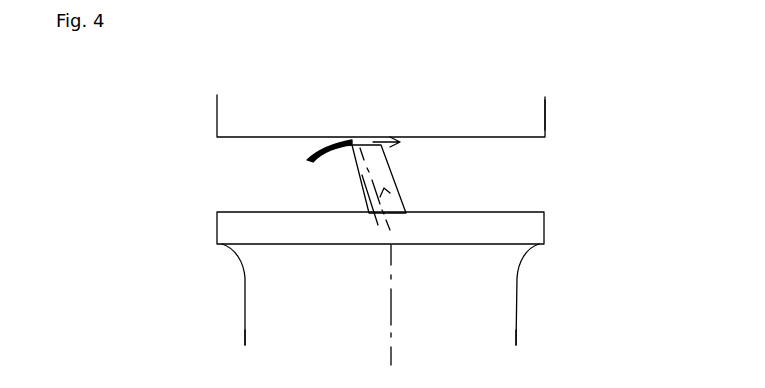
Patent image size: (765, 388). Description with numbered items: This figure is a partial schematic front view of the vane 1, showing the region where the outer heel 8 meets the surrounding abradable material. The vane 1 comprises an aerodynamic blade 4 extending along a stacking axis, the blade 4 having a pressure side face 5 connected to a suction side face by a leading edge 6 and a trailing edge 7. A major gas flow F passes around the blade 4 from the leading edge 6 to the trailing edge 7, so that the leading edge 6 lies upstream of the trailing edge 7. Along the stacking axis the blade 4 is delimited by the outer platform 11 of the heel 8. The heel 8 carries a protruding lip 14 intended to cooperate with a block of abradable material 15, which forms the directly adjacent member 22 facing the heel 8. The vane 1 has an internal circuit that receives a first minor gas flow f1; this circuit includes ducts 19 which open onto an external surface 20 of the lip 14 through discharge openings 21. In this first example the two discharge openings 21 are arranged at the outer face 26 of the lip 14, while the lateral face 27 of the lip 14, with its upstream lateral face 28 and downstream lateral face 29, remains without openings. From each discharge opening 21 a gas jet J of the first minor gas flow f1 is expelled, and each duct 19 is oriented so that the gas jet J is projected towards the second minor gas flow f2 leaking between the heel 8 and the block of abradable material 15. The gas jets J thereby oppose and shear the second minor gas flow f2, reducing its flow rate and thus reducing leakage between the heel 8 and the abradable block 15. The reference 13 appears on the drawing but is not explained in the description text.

The vane 1 is at (565, 313).
The aerodynamic blade 4 is at (518, 335).
The pressure side face 5 is at (272, 330).
The leading edge 6 is at (245, 277).
The trailing edge 7 is at (525, 270).
The outer heel 8 is at (543, 205).
The outer platform 11 is at (230, 229).
The force direction 13 is at (96, 320).
The protruding lip 14 is at (402, 181).
The block of abradable material 15 is at (490, 120).
The duct 19 is at (365, 183).
The external surface 20 is at (405, 199).
The discharge opening 21 is at (370, 140).
The directly adjacent member 22 is at (547, 110).
The outer face 26 is at (358, 140).
The lateral face 27 is at (367, 200).
The upstream lateral face 28 is at (351, 164).
The downstream lateral face 29 is at (395, 164).
The first minor gas flow f1 is at (405, 216).
The second minor gas flow f2 is at (318, 145).
The major gas flow F is at (198, 324).
The gas jet J is at (358, 166).